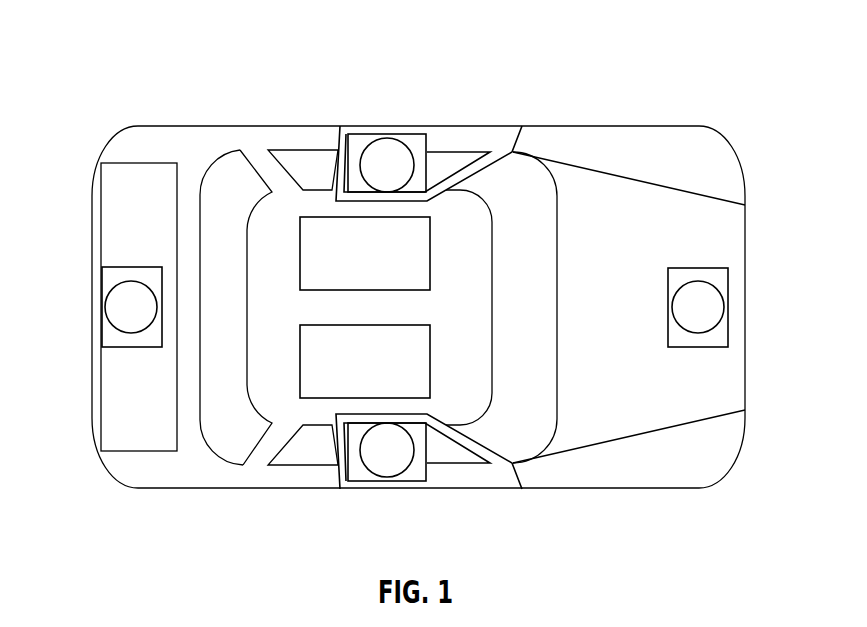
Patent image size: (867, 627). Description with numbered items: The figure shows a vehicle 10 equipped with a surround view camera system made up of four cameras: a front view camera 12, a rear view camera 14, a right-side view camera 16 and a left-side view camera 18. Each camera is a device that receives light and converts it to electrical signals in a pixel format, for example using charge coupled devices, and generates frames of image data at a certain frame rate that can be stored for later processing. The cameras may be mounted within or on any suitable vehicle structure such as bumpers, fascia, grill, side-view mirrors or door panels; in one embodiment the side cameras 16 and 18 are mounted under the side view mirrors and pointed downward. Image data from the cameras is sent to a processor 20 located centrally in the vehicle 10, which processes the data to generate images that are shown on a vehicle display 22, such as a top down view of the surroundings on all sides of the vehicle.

The vehicle 10 is at (178, 80).
The front view camera 12 is at (728, 320).
The rear view camera 14 is at (102, 333).
The right-side view camera 16 is at (410, 482).
The left-side view camera 18 is at (398, 134).
The processor 20 is at (379, 265).
The vehicle display 22 is at (379, 373).